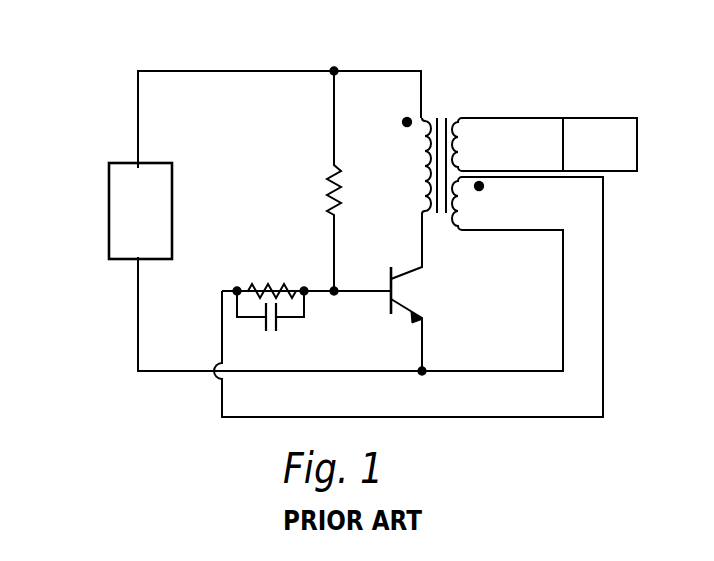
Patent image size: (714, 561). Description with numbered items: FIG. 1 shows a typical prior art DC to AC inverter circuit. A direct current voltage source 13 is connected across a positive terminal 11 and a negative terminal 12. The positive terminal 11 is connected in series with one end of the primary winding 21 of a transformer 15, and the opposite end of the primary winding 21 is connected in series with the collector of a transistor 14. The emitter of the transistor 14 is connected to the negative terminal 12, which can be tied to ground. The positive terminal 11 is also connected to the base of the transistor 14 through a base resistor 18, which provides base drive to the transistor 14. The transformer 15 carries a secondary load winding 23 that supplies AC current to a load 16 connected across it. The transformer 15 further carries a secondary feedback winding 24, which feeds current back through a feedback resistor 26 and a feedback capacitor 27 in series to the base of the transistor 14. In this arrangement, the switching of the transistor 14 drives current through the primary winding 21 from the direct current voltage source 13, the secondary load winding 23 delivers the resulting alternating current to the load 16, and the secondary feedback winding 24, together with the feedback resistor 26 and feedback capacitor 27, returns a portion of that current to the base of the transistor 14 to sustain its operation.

The positive terminal 11 is at (138, 163).
The negative terminal 12 is at (138, 263).
The direct current voltage source 13 is at (109, 213).
The transistor 14 is at (398, 294).
The transformer 15 is at (439, 140).
The load 16 is at (588, 118).
The base resistor 18 is at (323, 181).
The primary winding 21 is at (418, 163).
The secondary load winding 23 is at (455, 118).
The secondary feedback winding 24 is at (458, 230).
The feedback resistor 26 is at (282, 284).
The feedback capacitor 27 is at (270, 331).